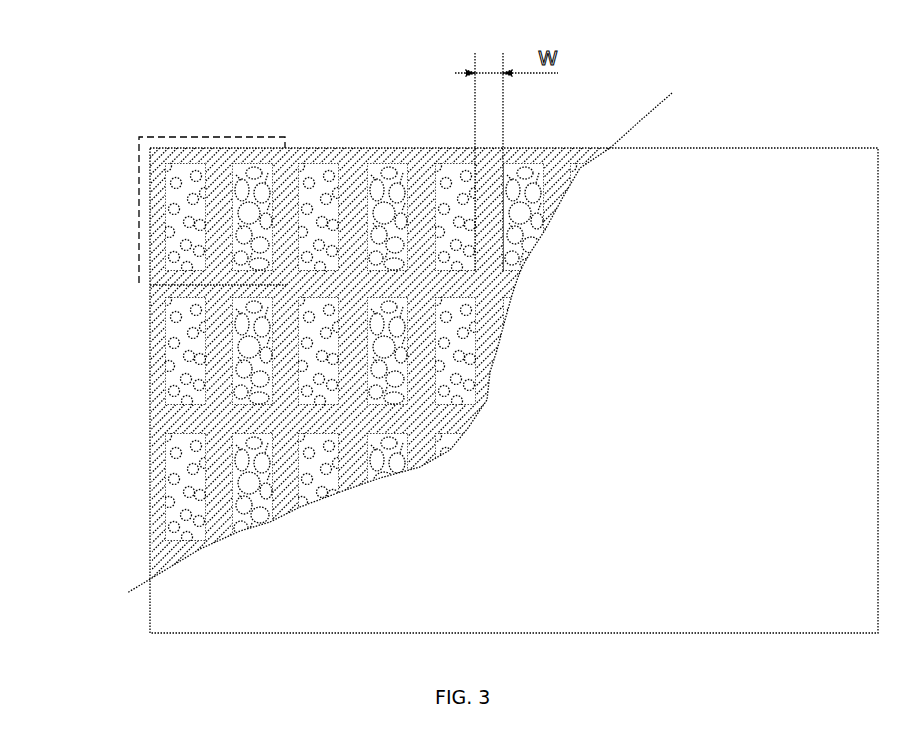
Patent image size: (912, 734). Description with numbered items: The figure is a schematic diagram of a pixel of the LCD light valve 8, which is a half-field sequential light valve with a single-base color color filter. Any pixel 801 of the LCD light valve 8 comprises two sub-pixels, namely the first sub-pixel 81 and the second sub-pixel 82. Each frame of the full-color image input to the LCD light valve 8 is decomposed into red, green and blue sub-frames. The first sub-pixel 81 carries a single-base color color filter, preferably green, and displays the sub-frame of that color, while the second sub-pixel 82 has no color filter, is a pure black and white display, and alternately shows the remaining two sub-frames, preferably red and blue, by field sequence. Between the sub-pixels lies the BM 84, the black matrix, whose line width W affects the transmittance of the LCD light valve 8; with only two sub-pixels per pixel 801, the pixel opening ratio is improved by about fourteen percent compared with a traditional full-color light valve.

The LCD light valve 8 is at (759, 171).
The first sub-pixel 81 is at (183, 178).
The second sub-pixel 82 is at (244, 172).
The BM 84 is at (159, 560).
The any pixel 801 is at (139, 280).